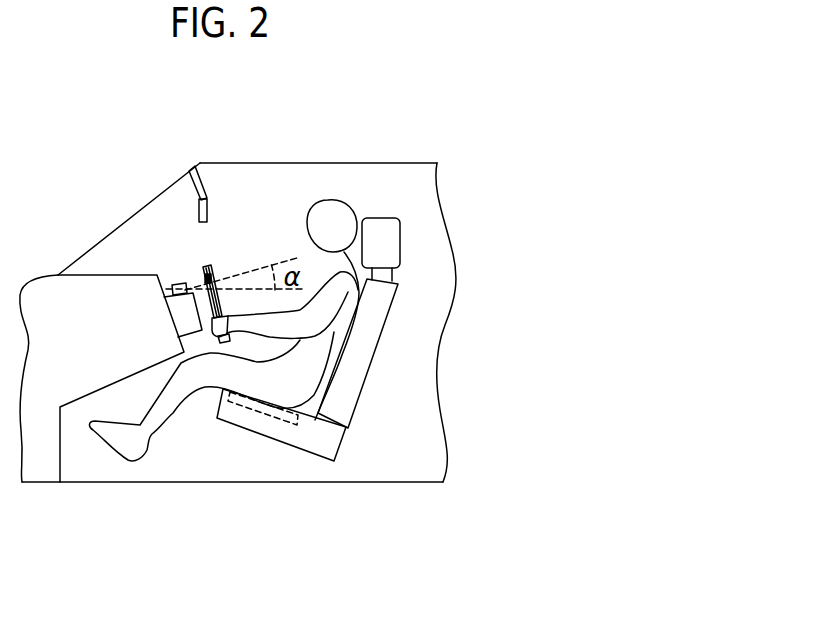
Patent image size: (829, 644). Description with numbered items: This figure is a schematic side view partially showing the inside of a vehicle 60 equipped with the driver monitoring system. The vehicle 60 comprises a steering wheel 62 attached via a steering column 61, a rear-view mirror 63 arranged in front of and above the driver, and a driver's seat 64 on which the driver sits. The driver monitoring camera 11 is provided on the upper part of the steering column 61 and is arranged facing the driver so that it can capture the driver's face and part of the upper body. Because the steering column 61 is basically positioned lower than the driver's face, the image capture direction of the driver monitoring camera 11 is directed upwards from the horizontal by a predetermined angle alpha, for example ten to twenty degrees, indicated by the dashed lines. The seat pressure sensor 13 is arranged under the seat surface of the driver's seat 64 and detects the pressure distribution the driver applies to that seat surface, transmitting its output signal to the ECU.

The driver monitoring camera 11 is at (183, 287).
The seat pressure sensor 13 is at (263, 410).
The vehicle 60 is at (375, 128).
The steering column 61 is at (166, 294).
The steering wheel 62 is at (213, 266).
The rear-view mirror 63 is at (198, 212).
The driver's seat 64 is at (367, 332).